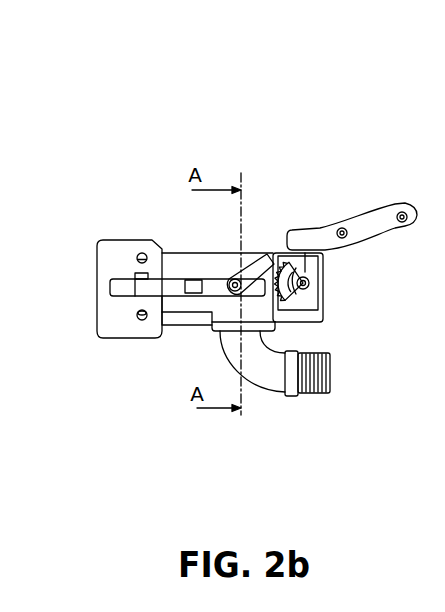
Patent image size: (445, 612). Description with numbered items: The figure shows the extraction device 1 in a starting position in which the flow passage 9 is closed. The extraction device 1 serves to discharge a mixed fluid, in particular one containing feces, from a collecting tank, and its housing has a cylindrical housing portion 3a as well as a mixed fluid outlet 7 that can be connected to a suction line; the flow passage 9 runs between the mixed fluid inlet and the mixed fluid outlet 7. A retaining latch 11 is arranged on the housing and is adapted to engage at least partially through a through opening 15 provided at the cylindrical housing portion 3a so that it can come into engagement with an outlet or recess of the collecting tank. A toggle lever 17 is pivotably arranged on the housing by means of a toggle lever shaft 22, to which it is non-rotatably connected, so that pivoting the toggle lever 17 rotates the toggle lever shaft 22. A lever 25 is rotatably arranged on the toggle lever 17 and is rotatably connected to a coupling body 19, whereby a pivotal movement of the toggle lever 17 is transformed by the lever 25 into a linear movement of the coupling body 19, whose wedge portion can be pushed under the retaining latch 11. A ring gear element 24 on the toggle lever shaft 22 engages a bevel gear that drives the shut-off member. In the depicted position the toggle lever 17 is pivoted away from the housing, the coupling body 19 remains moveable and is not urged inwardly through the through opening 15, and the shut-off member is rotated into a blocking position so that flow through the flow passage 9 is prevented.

The extraction device 1 is at (344, 132).
The cylindrical housing portion 3a is at (121, 258).
The mixed fluid outlet 7 is at (348, 378).
The flow passage 9 is at (263, 375).
The retaining latch 11 is at (160, 297).
The through opening 15 is at (114, 314).
The toggle lever 17 is at (380, 235).
The coupling body 19 is at (207, 283).
The toggle lever shaft 22 is at (309, 284).
The ring gear element 24 is at (295, 255).
The lever 25 is at (262, 254).